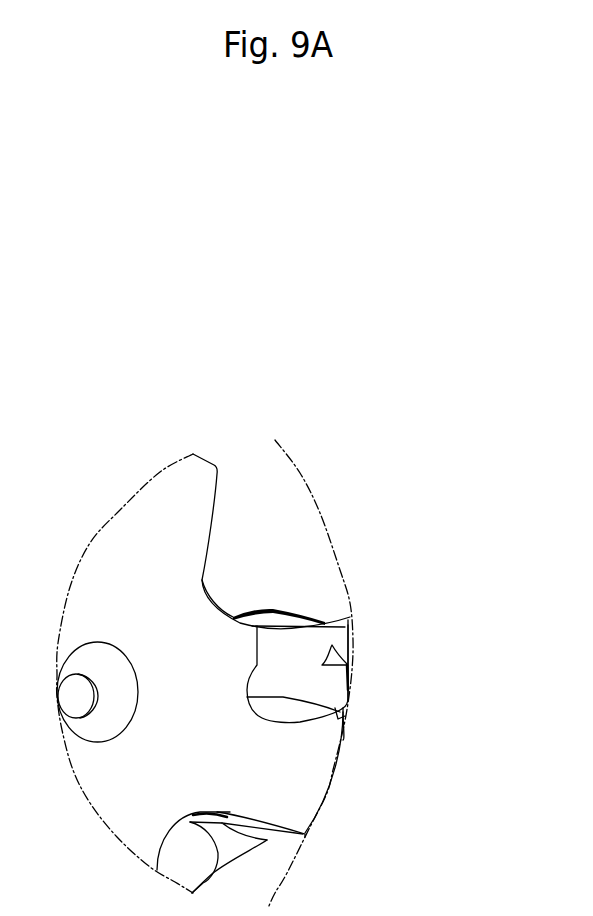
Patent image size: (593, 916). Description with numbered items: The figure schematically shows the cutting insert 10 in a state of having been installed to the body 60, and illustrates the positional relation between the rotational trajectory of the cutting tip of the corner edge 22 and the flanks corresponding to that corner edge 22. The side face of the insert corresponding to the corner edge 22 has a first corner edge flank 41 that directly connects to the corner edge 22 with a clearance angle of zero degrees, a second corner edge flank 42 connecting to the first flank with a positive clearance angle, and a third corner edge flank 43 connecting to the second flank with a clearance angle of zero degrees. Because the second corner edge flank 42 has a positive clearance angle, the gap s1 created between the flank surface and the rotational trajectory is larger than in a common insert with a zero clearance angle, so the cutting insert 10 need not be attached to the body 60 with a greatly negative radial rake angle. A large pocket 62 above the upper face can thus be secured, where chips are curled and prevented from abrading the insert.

The cutting insert 10 is at (333, 631).
The corner edge 22 is at (350, 615).
The first corner edge flank 41 is at (355, 642).
The second corner edge flank 42 is at (357, 673).
The third corner edge flank 43 is at (355, 697).
The body 60 is at (300, 800).
The pocket 62 is at (300, 522).
The gap s1 is at (312, 689).